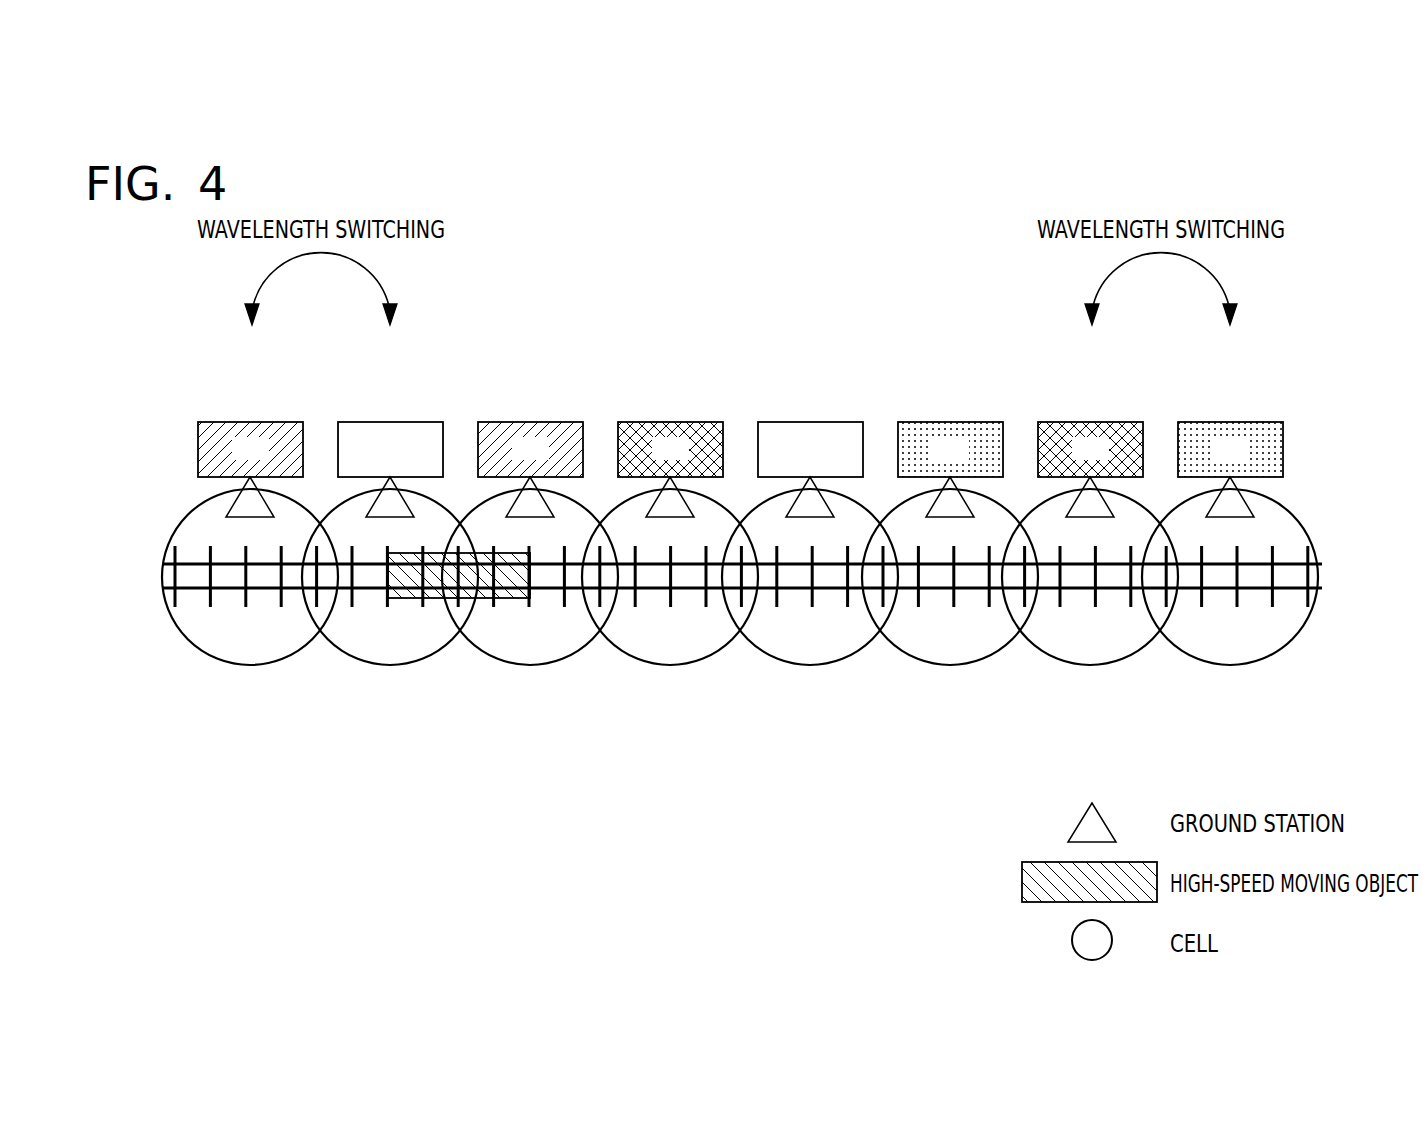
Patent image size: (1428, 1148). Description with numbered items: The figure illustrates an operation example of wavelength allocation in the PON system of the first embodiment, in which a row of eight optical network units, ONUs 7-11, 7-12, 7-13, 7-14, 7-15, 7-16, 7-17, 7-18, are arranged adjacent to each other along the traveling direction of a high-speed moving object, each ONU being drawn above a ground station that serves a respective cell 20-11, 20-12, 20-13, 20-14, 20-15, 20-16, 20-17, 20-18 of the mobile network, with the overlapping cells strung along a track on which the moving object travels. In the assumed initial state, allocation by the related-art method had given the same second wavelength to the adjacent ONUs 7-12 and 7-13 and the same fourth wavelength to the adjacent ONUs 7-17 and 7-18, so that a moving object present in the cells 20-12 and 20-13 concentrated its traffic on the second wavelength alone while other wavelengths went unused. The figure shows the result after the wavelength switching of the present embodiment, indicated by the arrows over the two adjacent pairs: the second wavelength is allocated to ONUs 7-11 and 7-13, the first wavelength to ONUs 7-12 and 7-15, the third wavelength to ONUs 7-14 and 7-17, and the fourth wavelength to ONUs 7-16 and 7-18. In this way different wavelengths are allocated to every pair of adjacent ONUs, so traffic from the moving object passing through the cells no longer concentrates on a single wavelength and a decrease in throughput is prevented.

The ONU 7-11 is at (220, 422).
The ONU 7-12 is at (360, 422).
The ONU 7-13 is at (500, 422).
The ONU 7-14 is at (640, 422).
The ONU 7-15 is at (780, 422).
The ONU 7-16 is at (920, 422).
The ONU 7-17 is at (1060, 422).
The ONU 7-18 is at (1200, 422).
The cell 20-11 is at (250, 665).
The cell 20-12 is at (390, 665).
The cell 20-13 is at (530, 665).
The cell 20-14 is at (670, 665).
The cell 20-15 is at (810, 665).
The cell 20-16 is at (950, 665).
The cell 20-17 is at (1090, 665).
The cell 20-18 is at (1230, 665).